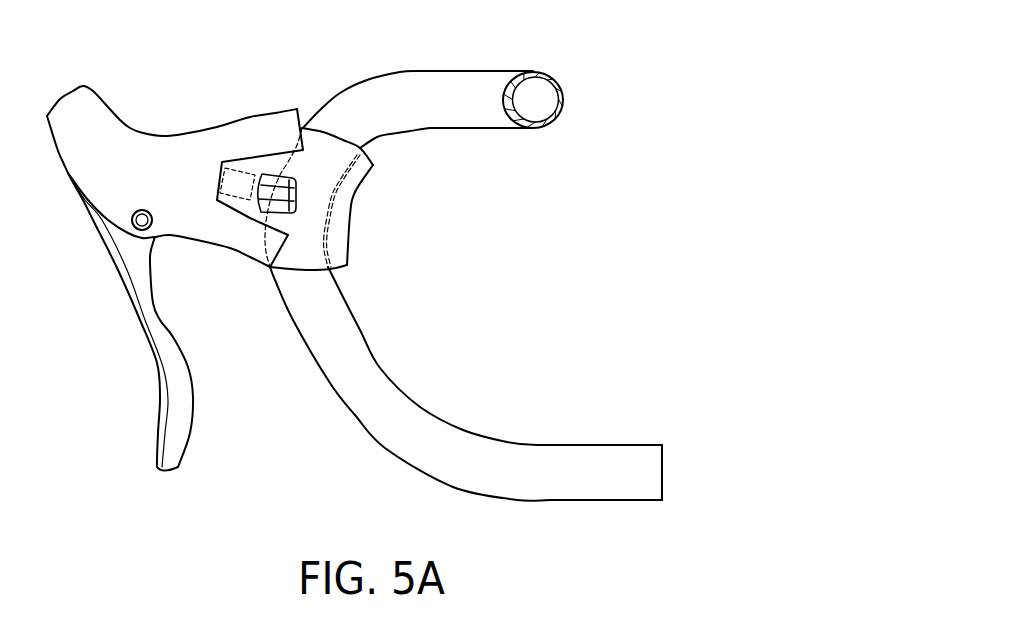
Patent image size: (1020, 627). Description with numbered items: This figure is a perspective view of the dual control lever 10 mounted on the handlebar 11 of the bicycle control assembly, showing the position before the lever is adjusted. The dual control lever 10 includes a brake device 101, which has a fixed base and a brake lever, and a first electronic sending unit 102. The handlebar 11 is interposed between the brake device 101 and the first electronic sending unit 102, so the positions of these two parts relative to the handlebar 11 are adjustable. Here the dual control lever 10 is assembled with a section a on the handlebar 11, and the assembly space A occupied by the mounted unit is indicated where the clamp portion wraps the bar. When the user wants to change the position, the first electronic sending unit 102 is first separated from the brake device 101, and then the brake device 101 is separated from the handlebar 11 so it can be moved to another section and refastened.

The dual control lever 10 is at (233, 250).
The brake device 101 is at (178, 134).
The first electronic sending unit 102 is at (332, 130).
The handlebar 11 is at (460, 93).
The assembly space A is at (363, 211).
The section a is at (307, 200).